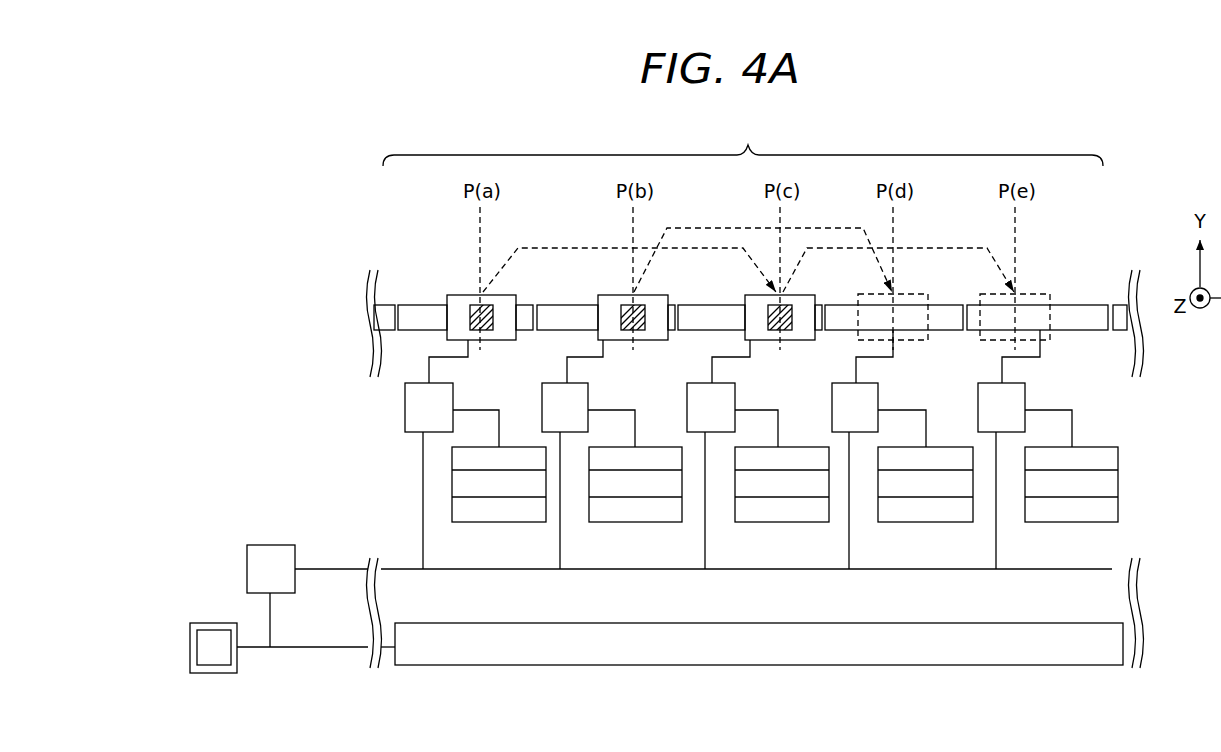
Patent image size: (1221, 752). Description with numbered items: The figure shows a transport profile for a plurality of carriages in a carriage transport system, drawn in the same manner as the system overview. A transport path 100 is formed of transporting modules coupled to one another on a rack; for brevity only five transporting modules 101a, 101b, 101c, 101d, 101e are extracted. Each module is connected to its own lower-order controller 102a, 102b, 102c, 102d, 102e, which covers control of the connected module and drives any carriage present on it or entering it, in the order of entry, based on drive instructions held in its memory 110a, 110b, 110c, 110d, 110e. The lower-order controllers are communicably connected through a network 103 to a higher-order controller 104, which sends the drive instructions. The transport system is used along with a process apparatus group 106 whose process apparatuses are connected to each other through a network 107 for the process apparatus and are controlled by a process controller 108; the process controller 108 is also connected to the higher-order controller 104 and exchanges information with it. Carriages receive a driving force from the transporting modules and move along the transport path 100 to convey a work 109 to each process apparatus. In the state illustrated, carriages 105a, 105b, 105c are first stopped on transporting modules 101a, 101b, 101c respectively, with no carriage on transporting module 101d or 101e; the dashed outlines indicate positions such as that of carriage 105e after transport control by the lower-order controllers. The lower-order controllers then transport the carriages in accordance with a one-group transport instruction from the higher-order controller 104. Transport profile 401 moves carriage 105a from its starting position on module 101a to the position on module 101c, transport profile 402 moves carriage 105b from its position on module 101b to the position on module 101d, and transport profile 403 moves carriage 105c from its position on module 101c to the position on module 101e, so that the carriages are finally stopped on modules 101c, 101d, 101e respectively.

The transport path 100 is at (743, 142).
The transporting module 101a is at (424, 312).
The transporting module 101b is at (570, 312).
The transporting module 101c is at (712, 312).
The transporting module 101d is at (846, 312).
The transporting module 101e is at (1088, 312).
The lower-order controller 102a is at (405, 405).
The lower-order controller 102b is at (542, 405).
The lower-order controller 102c is at (687, 405).
The lower-order controller 102d is at (832, 405).
The lower-order controller 102e is at (978, 405).
The network 103 is at (332, 568).
The higher-order controller 104 is at (272, 545).
The carriage 105a is at (495, 307).
The carriage 105b is at (645, 342).
The carriage 105c is at (790, 342).
The carriage 105e is at (1047, 342).
The process apparatus group 106 is at (523, 653).
The network for the process apparatus 107 is at (325, 648).
The process controller 108 is at (213, 674).
The work 109 is at (480, 306).
The memory 110a is at (499, 523).
The memory 110b is at (635, 523).
The memory 110c is at (787, 523).
The memory 110d is at (933, 523).
The memory 110e is at (1072, 523).
The transport profile 401 is at (553, 248).
The transport profile 402 is at (712, 228).
The transport profile 403 is at (959, 248).